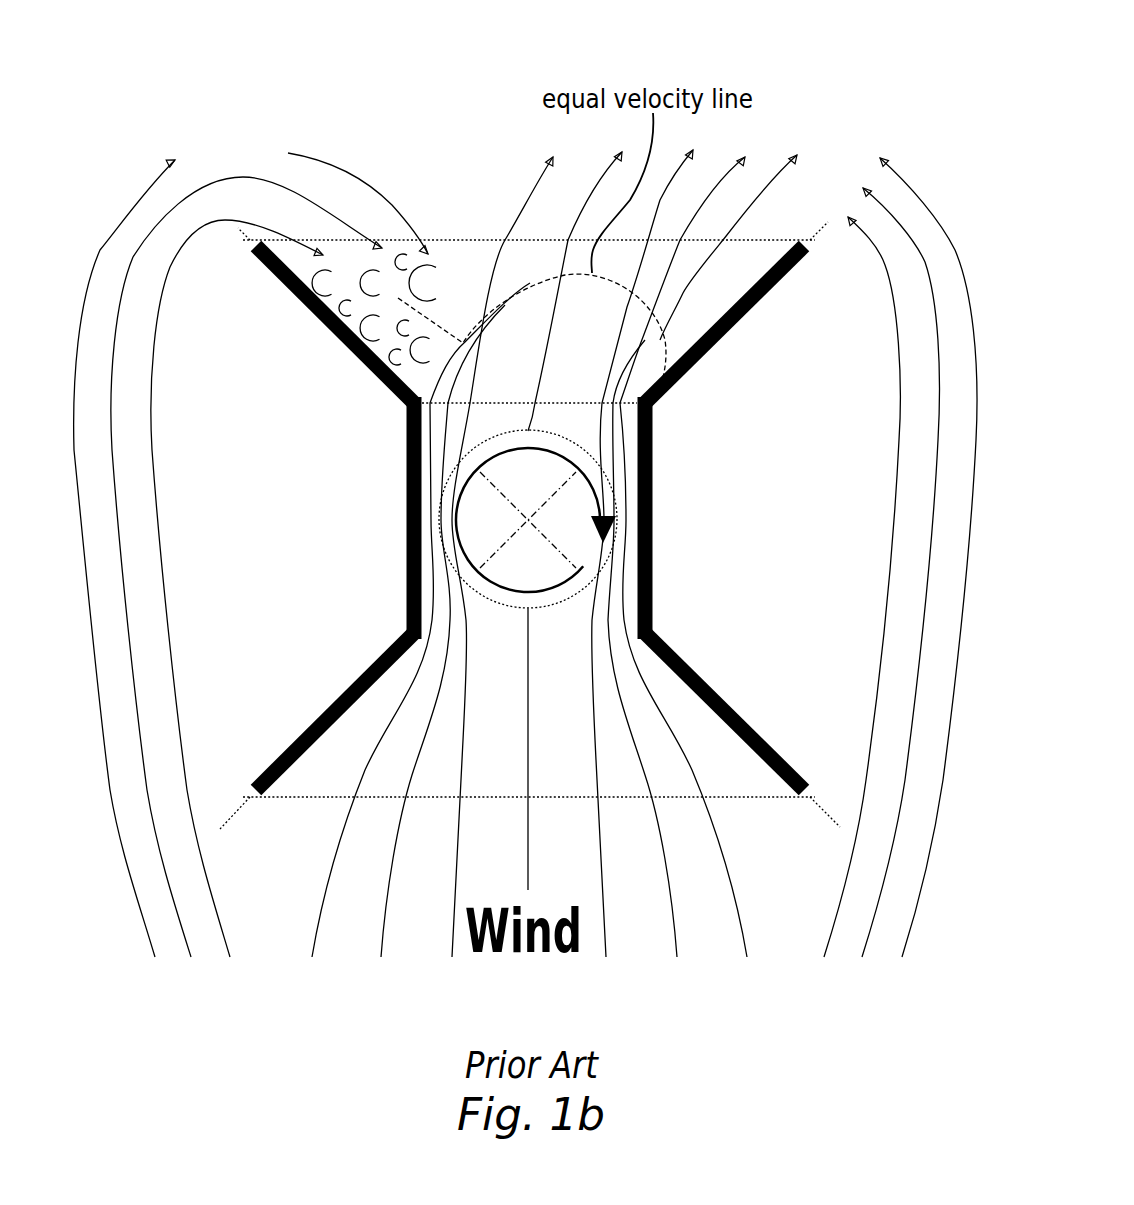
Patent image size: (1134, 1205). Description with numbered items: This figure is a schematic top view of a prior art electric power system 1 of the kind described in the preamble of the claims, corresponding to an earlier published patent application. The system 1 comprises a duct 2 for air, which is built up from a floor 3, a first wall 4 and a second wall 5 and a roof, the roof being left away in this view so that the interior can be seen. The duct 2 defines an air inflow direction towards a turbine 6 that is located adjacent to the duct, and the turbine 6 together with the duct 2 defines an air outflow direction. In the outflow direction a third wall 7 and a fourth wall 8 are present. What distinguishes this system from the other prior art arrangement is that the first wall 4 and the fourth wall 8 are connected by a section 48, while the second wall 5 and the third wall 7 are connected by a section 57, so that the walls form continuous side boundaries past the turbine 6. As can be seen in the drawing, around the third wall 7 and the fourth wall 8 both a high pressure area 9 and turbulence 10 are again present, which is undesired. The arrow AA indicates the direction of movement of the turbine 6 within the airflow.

The electric power system 1 is at (243, 92).
The duct 2 is at (516, 775).
The floor 3 is at (741, 786).
The first wall 4 is at (344, 697).
The second wall 5 is at (720, 703).
The turbine 6 is at (543, 571).
The third wall 7 is at (741, 317).
The fourth wall 8 is at (333, 333).
The high pressure area 9 is at (622, 387).
The turbulence 10 is at (437, 289).
The section 48 is at (407, 512).
The section 57 is at (653, 512).
The arrow AA is at (530, 449).